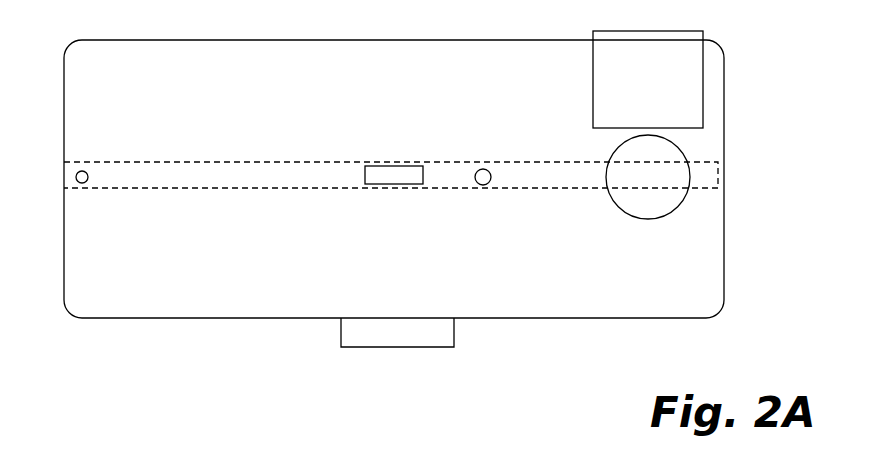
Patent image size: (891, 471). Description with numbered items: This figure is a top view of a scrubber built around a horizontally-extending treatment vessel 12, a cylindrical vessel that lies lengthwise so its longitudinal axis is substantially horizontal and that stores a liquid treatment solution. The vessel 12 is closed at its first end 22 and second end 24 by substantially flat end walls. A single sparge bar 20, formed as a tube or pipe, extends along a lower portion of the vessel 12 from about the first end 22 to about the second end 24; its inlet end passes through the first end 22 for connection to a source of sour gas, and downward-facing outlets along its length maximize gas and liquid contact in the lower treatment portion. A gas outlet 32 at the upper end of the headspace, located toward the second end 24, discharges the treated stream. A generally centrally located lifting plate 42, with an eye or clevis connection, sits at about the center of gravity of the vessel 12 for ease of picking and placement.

The treatment vessel 12 is at (725, 268).
The sparge bar 20 is at (572, 188).
The first end 22 is at (65, 253).
The second end 24 is at (725, 217).
The gas outlet 32 is at (661, 136).
The lifting plate 42 is at (380, 178).